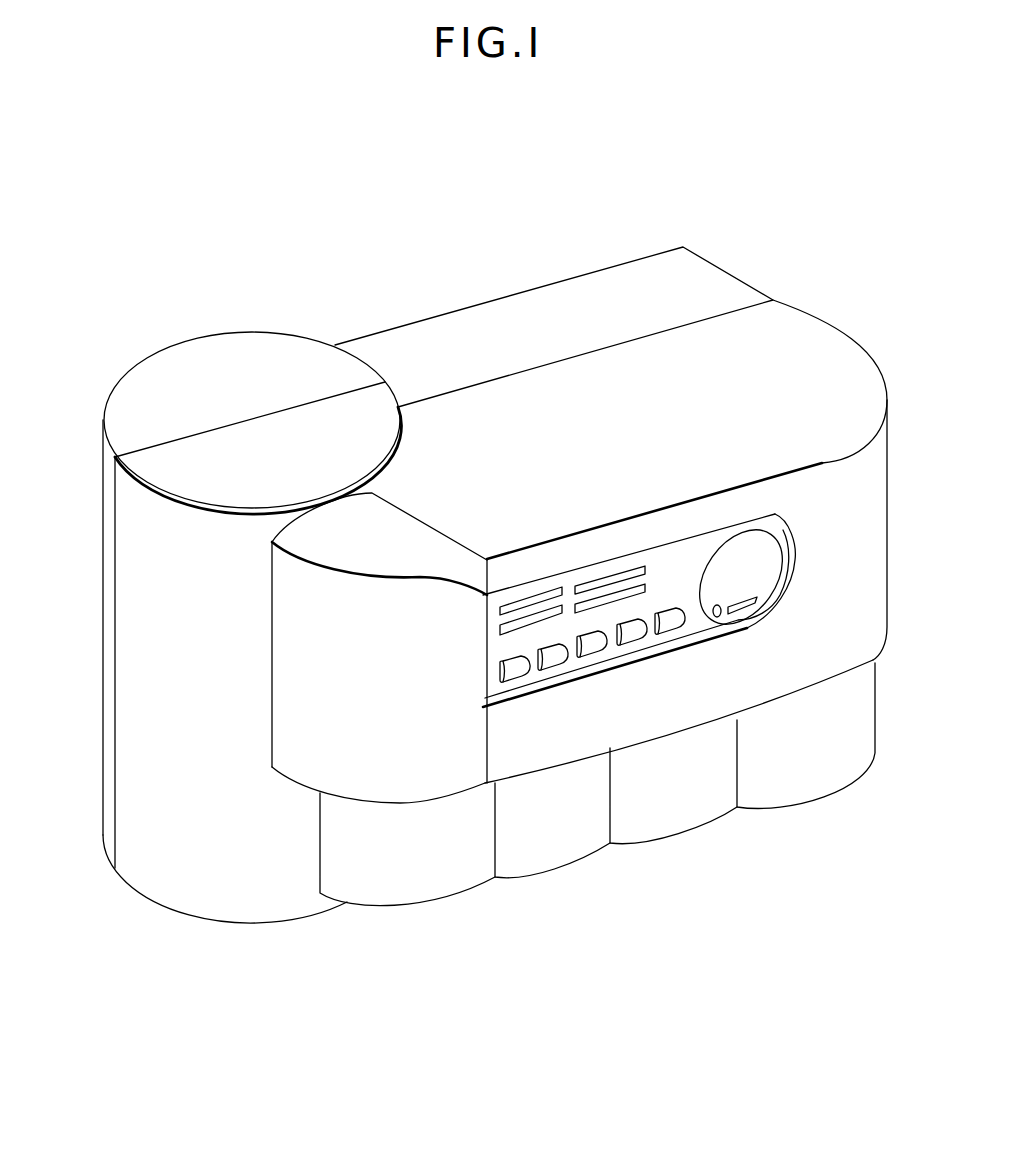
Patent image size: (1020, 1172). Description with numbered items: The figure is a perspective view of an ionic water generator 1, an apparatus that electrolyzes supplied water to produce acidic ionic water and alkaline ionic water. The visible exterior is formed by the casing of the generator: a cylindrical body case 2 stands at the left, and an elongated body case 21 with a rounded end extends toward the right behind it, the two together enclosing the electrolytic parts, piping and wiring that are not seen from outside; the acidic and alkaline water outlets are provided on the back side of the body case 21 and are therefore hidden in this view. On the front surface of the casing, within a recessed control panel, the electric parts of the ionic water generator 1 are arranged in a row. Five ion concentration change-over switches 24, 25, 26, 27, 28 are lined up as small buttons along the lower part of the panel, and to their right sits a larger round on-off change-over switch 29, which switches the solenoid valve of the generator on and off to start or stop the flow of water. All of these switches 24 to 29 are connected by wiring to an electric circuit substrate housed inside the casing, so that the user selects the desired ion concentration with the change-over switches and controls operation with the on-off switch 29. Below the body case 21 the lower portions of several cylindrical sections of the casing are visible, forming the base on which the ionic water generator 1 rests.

The ionic water generator 1 is at (142, 314).
The body case 2 is at (280, 917).
The body case 21 is at (485, 315).
The ion concentration change-over switch 24 is at (517, 680).
The ion concentration change-over switch 25 is at (557, 668).
The ion concentration change-over switch 26 is at (593, 655).
The ion concentration change-over switch 27 is at (632, 642).
The ion concentration change-over switch 28 is at (672, 628).
The on-off change-over switch 29 is at (747, 547).